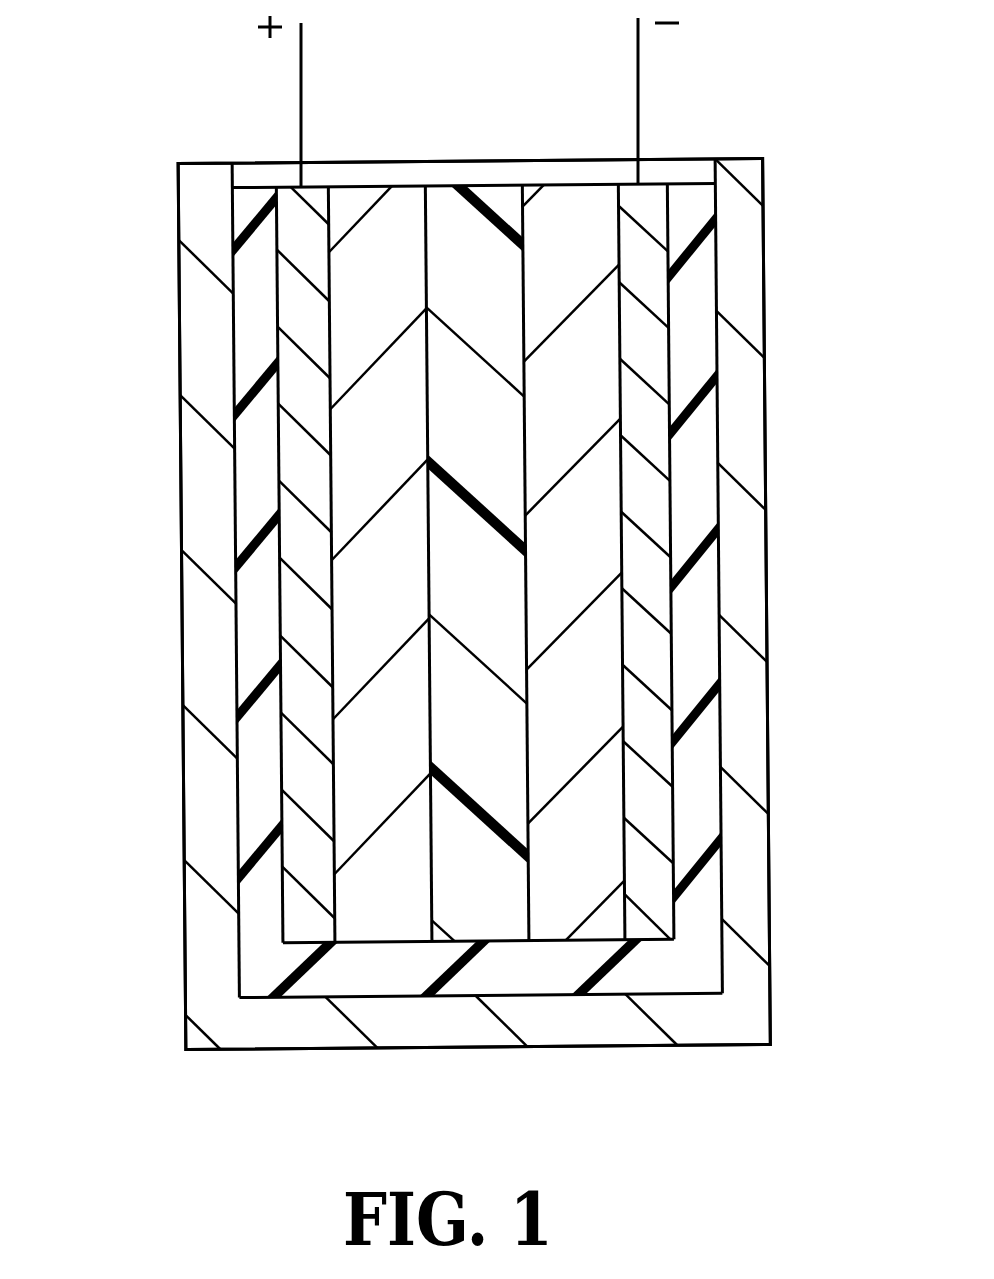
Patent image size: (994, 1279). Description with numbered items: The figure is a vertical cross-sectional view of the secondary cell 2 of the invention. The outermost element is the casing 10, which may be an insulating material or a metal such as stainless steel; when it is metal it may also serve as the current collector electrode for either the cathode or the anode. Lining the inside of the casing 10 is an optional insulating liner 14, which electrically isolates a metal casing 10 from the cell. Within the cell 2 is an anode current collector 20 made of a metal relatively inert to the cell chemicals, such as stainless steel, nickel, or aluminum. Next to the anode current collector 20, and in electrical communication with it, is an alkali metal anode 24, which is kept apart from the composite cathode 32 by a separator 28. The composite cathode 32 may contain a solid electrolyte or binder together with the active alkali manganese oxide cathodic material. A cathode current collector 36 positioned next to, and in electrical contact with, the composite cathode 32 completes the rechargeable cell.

The secondary cell 2 is at (108, 528).
The casing 10 is at (770, 568).
The insulating liner 14 is at (698, 768).
The anode current collector 20 is at (650, 358).
The alkali metal anode 24 is at (560, 207).
The separator 28 is at (458, 208).
The composite cathode 32 is at (363, 197).
The cathode current collector 36 is at (297, 298).